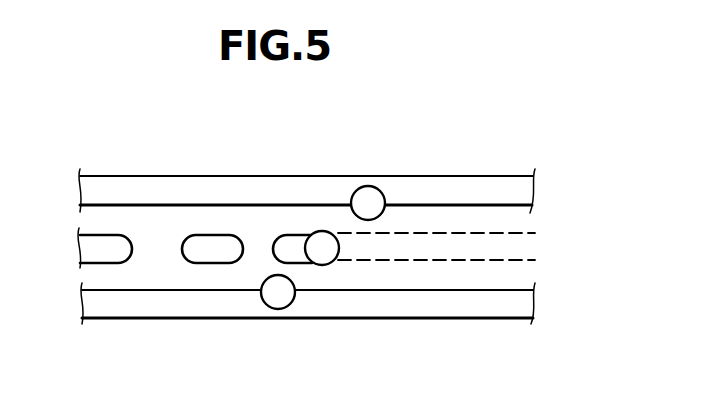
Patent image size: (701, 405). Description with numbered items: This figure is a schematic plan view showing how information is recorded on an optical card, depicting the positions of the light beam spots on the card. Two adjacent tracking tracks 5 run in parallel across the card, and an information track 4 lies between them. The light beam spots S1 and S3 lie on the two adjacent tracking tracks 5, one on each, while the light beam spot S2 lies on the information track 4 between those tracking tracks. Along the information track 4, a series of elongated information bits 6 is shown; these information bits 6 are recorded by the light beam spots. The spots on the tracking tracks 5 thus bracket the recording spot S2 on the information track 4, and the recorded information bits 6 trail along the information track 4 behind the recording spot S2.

The information track 4 is at (337, 206).
The tracking track 5 is at (525, 188).
The information bits 6 is at (127, 234).
The light beam spot S1 is at (283, 297).
The light beam spot S2 is at (318, 243).
The light beam spot S3 is at (365, 203).